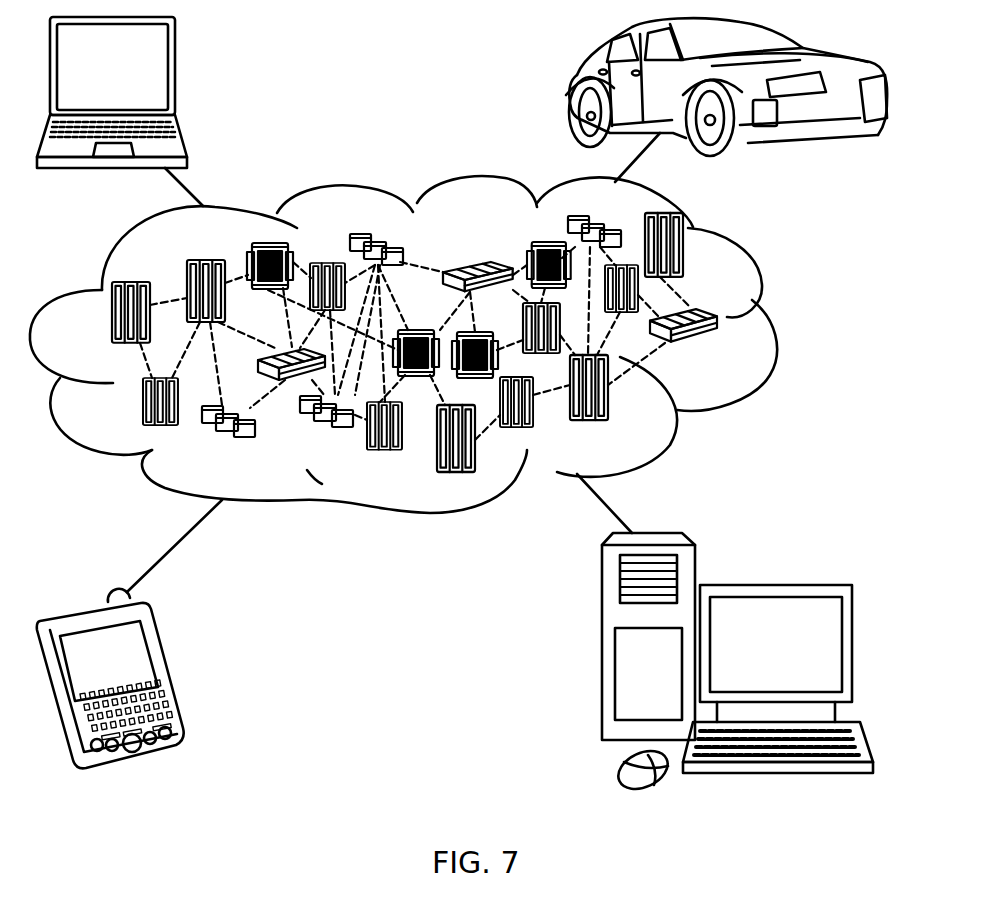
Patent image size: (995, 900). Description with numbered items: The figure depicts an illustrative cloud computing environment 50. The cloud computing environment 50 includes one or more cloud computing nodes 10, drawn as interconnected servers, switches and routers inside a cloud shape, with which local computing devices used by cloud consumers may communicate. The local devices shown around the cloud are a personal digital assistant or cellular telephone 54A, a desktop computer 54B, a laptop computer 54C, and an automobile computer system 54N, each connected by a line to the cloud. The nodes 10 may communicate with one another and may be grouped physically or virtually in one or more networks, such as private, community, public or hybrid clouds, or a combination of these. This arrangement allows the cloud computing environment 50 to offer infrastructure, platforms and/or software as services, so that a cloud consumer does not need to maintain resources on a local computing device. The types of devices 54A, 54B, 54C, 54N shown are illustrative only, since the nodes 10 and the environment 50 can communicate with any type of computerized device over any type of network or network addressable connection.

The cloud computing node 10 is at (718, 348).
The cloud computing environment 50 is at (777, 322).
The personal digital assistant or cellular telephone 54A is at (166, 672).
The desktop computer 54B is at (776, 585).
The laptop computer 54C is at (176, 74).
The automobile computer system 54N is at (575, 90).